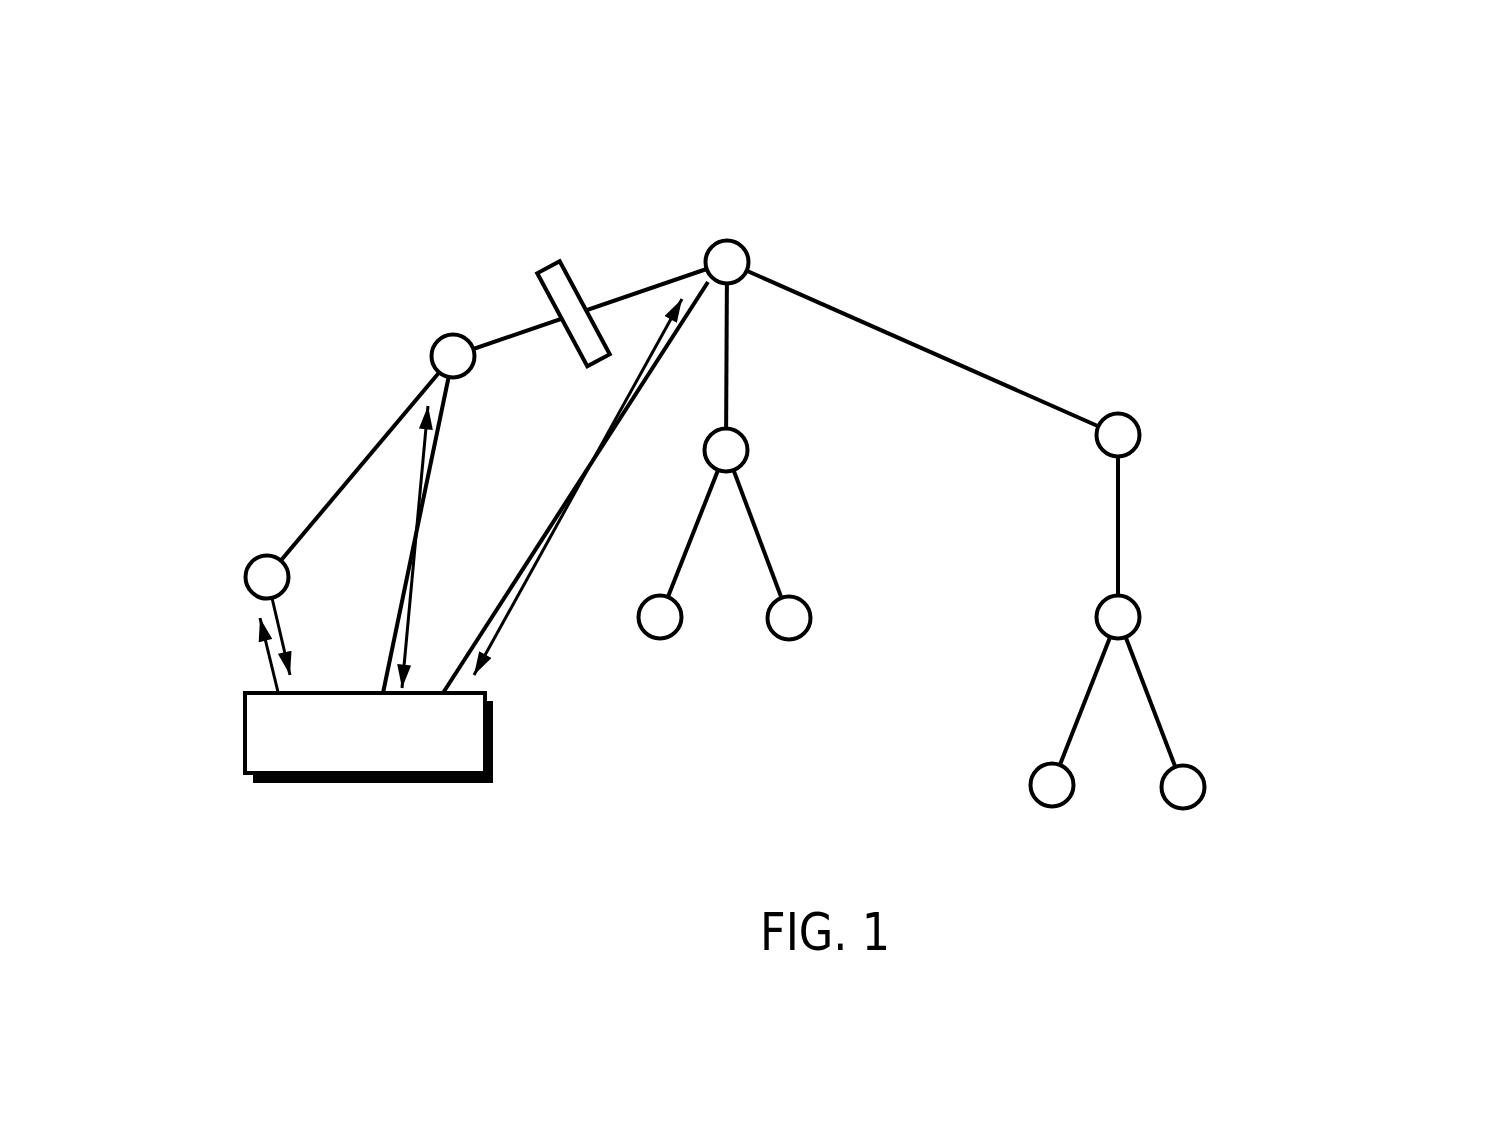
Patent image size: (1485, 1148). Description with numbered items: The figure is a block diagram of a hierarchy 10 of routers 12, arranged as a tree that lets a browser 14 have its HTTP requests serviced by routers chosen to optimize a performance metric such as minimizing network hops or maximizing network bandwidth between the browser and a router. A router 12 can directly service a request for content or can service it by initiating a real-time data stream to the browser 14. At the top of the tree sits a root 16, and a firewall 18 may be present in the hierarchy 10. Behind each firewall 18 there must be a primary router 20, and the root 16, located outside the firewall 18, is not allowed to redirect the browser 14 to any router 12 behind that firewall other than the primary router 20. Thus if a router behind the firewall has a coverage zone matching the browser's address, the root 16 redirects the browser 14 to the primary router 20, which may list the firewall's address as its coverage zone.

The hierarchy 10 is at (1041, 158).
The router 12 is at (1168, 429).
The browser 14 is at (245, 730).
The root 16 is at (725, 241).
The firewall 18 is at (562, 262).
The primary router 20 is at (453, 334).